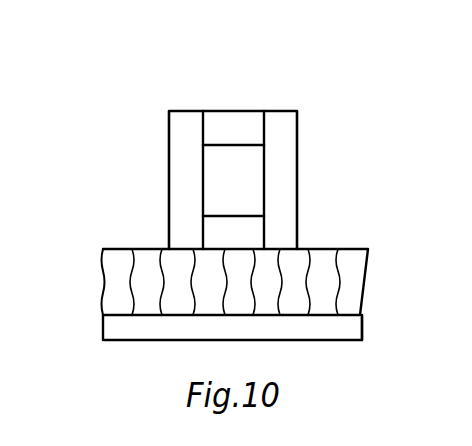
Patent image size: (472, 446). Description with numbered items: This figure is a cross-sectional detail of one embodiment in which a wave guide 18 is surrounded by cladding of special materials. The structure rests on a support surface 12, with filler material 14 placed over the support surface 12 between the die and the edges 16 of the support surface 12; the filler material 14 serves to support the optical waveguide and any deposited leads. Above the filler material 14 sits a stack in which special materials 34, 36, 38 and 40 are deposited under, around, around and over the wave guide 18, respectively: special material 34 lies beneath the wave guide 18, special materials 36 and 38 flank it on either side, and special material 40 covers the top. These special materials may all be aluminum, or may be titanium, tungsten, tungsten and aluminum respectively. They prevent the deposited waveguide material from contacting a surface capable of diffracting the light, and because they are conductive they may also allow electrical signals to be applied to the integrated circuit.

The support surface 12 is at (102, 327).
The filler material 14 is at (110, 263).
The edges of support surface 16 is at (357, 323).
The optical waveguide 18 is at (247, 193).
The special material deposited under waveguide 34 is at (257, 232).
The special material deposited around waveguide 36 is at (177, 170).
The special material deposited around waveguide 38 is at (293, 151).
The special material deposited over waveguide 40 is at (237, 111).